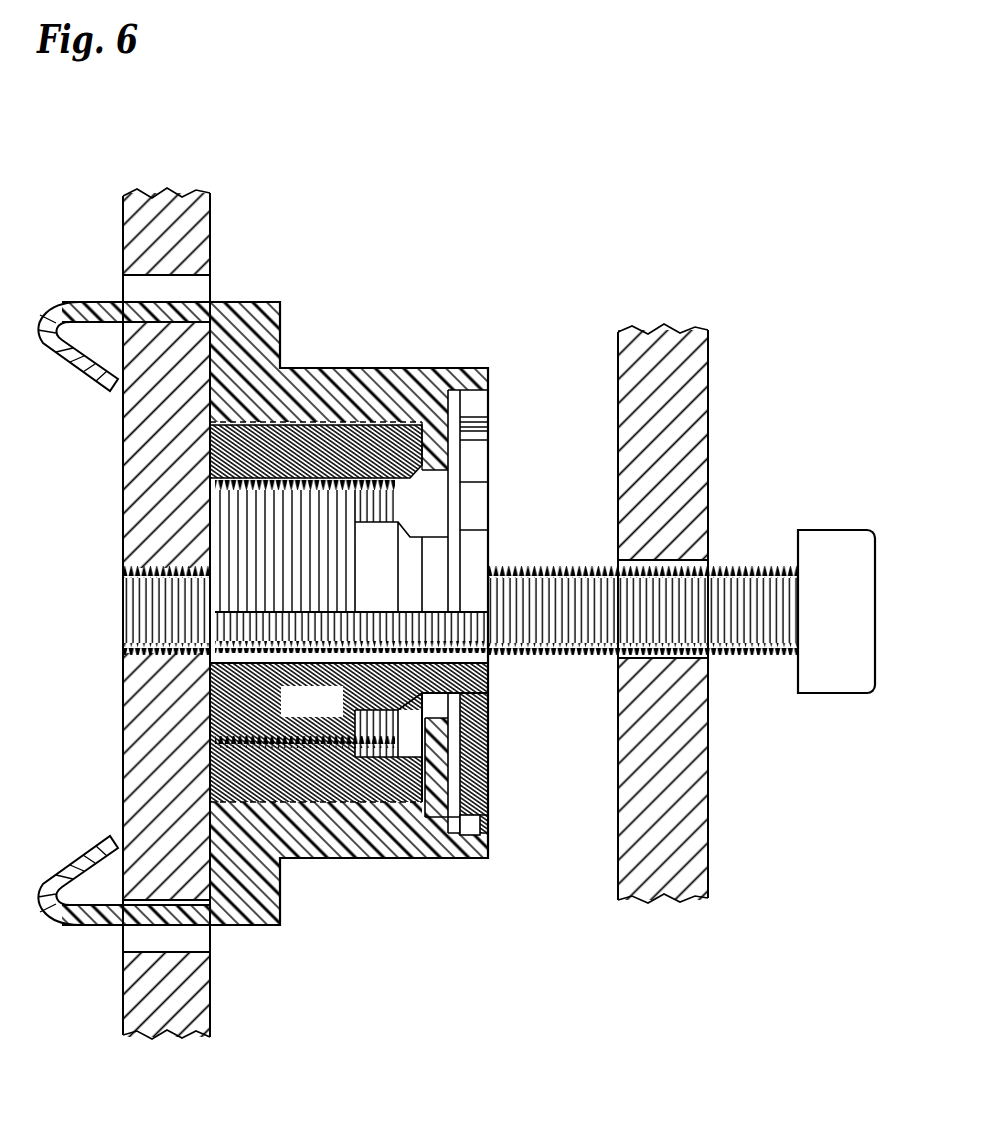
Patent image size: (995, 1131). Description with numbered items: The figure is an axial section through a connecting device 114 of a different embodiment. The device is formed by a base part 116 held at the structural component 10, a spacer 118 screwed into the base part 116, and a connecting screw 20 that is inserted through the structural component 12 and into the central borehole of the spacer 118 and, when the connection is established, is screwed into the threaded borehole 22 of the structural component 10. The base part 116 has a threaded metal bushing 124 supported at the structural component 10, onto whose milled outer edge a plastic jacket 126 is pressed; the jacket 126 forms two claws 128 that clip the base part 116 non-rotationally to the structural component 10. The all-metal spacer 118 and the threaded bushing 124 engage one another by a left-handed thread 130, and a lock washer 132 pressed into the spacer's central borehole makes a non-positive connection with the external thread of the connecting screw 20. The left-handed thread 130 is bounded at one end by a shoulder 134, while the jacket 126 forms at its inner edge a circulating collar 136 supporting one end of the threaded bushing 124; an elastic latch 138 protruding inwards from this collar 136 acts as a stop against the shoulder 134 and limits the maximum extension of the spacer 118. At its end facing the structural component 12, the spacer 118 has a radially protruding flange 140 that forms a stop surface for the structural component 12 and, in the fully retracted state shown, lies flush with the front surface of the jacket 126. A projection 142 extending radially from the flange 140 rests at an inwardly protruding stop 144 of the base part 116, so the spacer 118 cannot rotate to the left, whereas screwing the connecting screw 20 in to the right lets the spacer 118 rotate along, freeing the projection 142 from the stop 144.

The structural component 10 is at (123, 228).
The structural component 12 is at (710, 350).
The connecting screw 20 is at (772, 529).
The threaded borehole 22 is at (135, 620).
The connecting device 114 is at (478, 204).
The base part 116 is at (314, 361).
The spacer 118 is at (493, 771).
The threaded metal bushing 124 is at (378, 422).
The plastic jacket 126 is at (258, 322).
The claws 128 is at (70, 365).
The left-handed thread 130 is at (213, 515).
The lock washer 132 is at (358, 700).
The shoulder 134 is at (393, 770).
The circulating collar 136 is at (448, 445).
The elastic latch 138 is at (438, 728).
The flange 140 is at (489, 430).
The projection 142 is at (468, 832).
The stop 144 is at (483, 826).